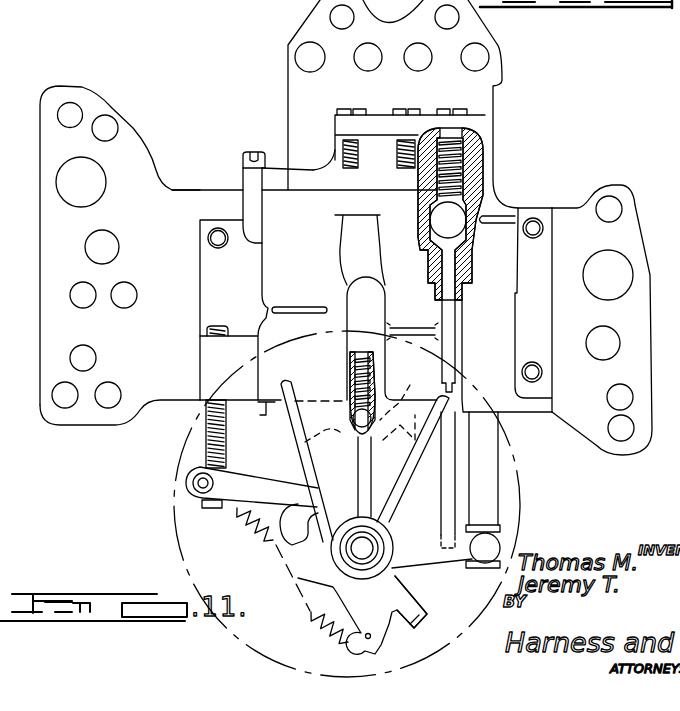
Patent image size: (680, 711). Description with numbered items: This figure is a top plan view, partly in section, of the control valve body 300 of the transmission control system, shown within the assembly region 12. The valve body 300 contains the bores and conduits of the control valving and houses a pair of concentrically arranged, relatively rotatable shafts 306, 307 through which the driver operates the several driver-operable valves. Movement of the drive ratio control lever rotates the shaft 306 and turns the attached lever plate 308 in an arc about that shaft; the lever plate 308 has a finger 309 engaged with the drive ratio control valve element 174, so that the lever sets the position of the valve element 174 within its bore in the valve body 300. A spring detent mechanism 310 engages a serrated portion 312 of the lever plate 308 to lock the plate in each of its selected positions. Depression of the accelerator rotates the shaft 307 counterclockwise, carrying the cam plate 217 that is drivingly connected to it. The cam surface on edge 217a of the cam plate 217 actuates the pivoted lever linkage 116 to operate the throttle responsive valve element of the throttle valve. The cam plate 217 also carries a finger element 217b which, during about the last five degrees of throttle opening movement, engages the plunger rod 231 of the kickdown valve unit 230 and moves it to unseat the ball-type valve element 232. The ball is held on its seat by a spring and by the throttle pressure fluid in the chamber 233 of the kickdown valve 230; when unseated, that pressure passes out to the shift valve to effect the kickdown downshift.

The carburetor assembly region 12 is at (168, 513).
The pivoted lever linkage 116 is at (208, 403).
The drive ratio control valve element 174 is at (487, 465).
The throttle cam plate 217 is at (400, 635).
The cam surface edge 217a is at (302, 507).
The finger element 217b is at (423, 612).
The kickdown valve unit 230 is at (497, 168).
The plunger rod 231 is at (450, 443).
The ball-type valve element 232 is at (457, 212).
The chamber 233 is at (468, 140).
The valve body 300 is at (567, 200).
The rotatable shaft 306 is at (333, 561).
The rotatable shaft 307 is at (345, 565).
The lever plate 308 is at (282, 452).
The finger 309 is at (437, 562).
The spring detent mechanism 310 is at (349, 412).
The serrated portion 312 is at (403, 397).